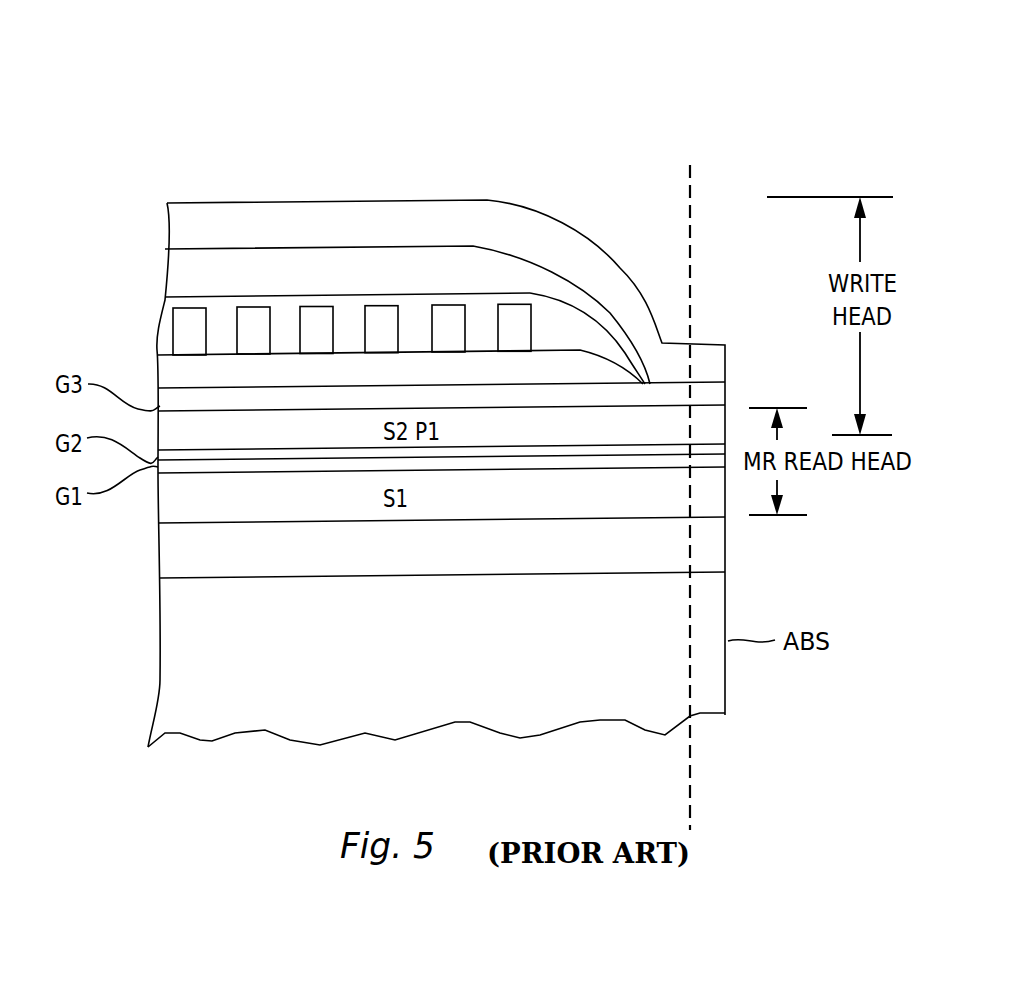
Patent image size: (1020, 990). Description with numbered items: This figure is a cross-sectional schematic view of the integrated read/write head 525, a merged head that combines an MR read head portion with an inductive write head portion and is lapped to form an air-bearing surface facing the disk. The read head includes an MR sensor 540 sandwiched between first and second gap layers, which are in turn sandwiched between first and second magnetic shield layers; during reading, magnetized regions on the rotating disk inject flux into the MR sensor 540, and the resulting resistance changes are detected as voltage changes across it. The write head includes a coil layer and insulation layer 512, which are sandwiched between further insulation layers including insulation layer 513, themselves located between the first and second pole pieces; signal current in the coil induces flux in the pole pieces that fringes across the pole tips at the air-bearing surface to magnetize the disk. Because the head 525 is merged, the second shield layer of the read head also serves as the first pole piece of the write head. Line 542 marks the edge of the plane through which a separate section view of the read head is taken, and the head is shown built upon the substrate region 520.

The integrated read/write head 525 is at (410, 124).
The insulation layer 513 is at (418, 272).
The insulation layer 512 is at (573, 327).
The line 542 is at (690, 288).
The MR sensor 540 is at (677, 458).
The substrate 520 is at (187, 682).